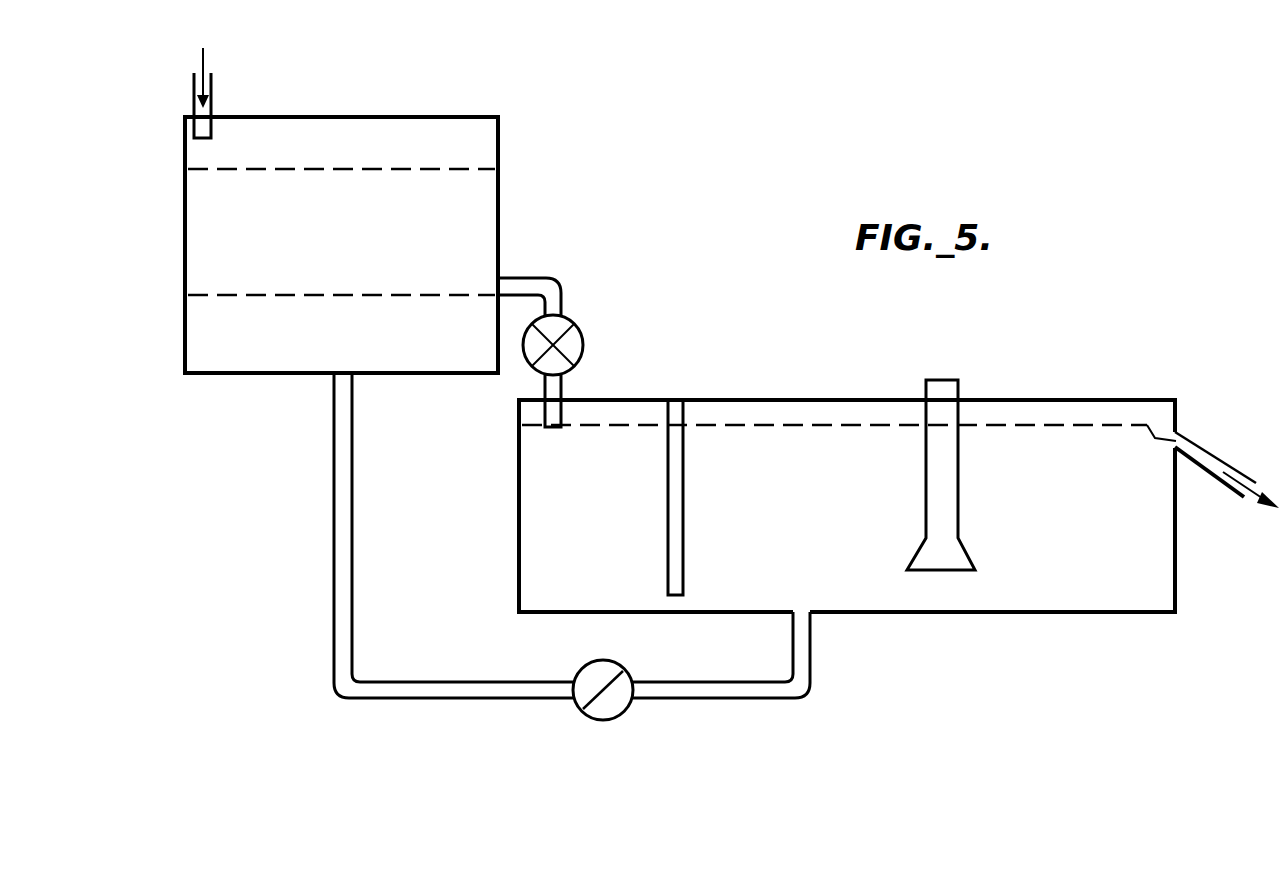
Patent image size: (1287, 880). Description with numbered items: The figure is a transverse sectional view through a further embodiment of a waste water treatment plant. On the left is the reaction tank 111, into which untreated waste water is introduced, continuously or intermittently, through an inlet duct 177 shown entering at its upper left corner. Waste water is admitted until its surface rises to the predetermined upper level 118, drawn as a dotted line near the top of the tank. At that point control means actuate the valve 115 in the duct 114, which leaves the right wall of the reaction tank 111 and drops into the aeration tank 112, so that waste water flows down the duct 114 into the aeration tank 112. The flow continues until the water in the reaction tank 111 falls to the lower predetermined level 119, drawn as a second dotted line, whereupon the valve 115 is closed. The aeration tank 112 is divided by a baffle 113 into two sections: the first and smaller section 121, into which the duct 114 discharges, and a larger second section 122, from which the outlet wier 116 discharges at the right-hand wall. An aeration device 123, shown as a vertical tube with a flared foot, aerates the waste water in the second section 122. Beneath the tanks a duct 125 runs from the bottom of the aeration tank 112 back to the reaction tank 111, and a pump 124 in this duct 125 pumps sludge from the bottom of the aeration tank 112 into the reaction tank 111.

The reaction tank 111 is at (352, 240).
The aeration tank 112 is at (815, 543).
The baffle 113 is at (677, 479).
The duct 114 is at (546, 275).
The valve 115 is at (574, 327).
The outlet wier 116 is at (1177, 433).
The predetermined level 118 is at (464, 167).
The predetermined level 119 is at (360, 298).
The first section 121 is at (531, 542).
The second section 122 is at (1020, 614).
The aeration device 123 is at (945, 475).
The pump 124 is at (626, 710).
The duct 125 is at (427, 700).
The inlet 177 is at (213, 107).